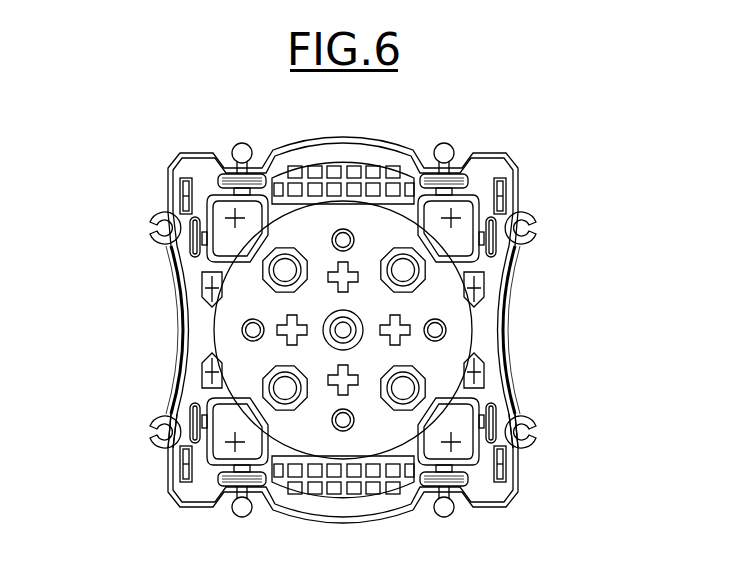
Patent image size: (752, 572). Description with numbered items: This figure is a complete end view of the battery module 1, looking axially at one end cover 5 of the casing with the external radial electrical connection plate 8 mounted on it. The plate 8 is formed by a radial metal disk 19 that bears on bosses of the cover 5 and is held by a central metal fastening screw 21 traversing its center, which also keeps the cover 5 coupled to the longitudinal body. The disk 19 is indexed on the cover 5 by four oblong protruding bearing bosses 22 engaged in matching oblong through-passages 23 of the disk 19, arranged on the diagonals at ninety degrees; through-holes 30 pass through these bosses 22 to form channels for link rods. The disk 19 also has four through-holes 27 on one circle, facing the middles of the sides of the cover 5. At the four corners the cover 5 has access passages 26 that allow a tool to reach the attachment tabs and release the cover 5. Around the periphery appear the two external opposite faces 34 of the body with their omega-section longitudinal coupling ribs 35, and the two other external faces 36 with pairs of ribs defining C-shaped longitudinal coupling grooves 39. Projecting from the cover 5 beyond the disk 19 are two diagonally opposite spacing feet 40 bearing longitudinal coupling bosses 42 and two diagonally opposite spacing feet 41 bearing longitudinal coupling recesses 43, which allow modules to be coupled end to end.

The battery module 1 is at (320, 327).
The end cover 5 is at (196, 327).
The external radial electrical connection plate 8 is at (482, 323).
The radial metal disk 19 is at (446, 340).
The central metal fastening screw 21 is at (352, 326).
The protruding bearing boss 22 is at (205, 383).
The through-passage 23 is at (275, 376).
The access passage 26 is at (205, 478).
The through-hole 27 is at (342, 229).
The through-hole 30 is at (408, 388).
The external opposite face 34 is at (476, 145).
The longitudinal coupling rib 35 is at (445, 145).
The external opposite face 36 is at (526, 470).
The longitudinal coupling groove 39 is at (530, 434).
The spacing foot 40 is at (481, 191).
The spacing foot 41 is at (209, 186).
The longitudinal coupling boss 42 is at (515, 250).
The longitudinal coupling recess 43 is at (172, 250).